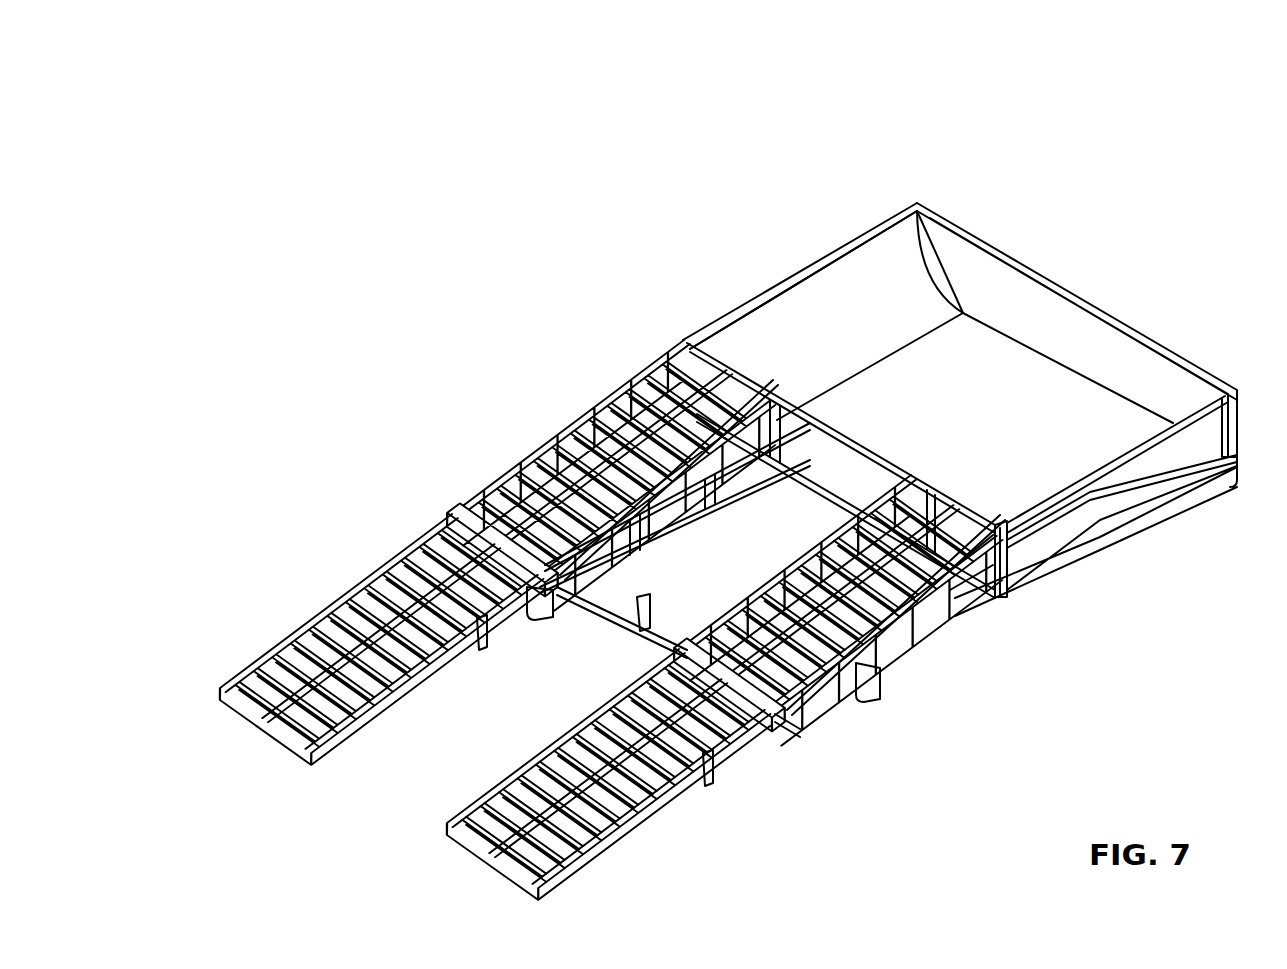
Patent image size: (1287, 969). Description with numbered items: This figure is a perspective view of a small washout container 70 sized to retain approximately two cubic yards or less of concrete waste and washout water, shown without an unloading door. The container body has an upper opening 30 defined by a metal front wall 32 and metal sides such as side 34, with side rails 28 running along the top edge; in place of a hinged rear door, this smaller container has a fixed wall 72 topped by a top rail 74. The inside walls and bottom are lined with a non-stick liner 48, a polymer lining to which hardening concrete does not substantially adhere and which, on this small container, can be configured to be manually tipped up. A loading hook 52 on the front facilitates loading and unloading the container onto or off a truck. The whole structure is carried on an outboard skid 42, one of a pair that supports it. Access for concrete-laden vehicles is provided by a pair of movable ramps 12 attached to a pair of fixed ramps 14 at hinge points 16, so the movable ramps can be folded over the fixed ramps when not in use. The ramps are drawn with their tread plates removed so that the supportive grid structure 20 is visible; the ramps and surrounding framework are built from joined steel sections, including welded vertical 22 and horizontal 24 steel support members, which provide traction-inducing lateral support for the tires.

The small washout container 70 is at (345, 106).
The movable ramps 12 is at (260, 613).
The fixed ramps 14 is at (545, 401).
The hinge points 16 is at (465, 507).
The supportive grid structure 20 is at (805, 655).
The vertical steel support members 22 is at (778, 430).
The horizontal steel support members 24 is at (590, 617).
The side rails 28 is at (797, 266).
The upper opening 30 is at (1040, 455).
The metal front wall 32 is at (868, 478).
The metal side 34 is at (897, 258).
The outboard skid 42 is at (528, 612).
The non-stick liner 48 is at (812, 349).
The loading hook 52 is at (642, 608).
The fixed wall 72 is at (1130, 358).
The top rail 74 is at (978, 238).